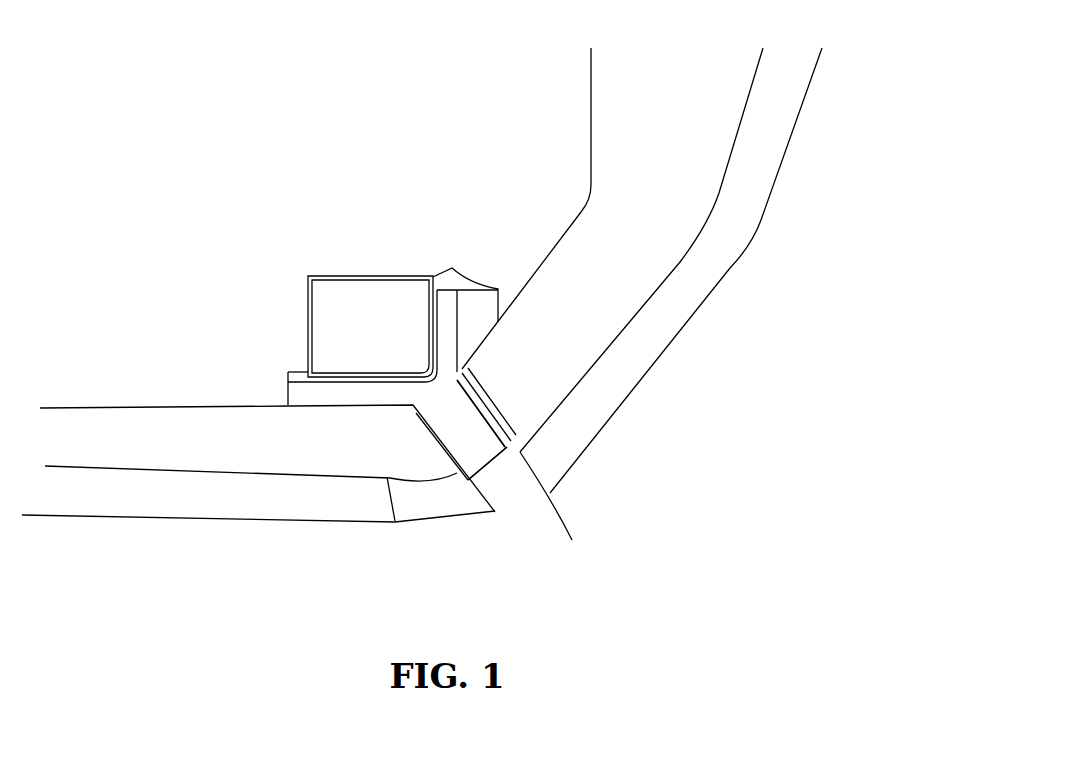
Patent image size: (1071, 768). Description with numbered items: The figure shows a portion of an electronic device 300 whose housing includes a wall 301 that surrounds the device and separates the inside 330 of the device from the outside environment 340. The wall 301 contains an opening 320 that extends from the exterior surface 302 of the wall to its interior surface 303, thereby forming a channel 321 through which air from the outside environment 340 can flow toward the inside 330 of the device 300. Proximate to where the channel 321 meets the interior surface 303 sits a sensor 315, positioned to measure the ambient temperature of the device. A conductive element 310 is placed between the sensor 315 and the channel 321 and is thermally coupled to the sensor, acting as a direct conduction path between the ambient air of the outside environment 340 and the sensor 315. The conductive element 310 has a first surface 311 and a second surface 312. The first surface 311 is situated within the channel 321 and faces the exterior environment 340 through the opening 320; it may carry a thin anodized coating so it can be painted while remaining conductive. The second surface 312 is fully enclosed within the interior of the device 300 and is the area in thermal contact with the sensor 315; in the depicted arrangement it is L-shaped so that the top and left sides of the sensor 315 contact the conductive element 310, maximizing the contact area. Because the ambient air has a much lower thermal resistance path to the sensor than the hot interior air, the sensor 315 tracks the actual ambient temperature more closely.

The electronic device 300 is at (528, 31).
The wall 301 is at (252, 446).
The exterior surface 302 is at (578, 433).
The interior surface 303 is at (548, 258).
The conductive element 310 is at (359, 435).
The first surface 311 is at (572, 540).
The second surface 312 is at (290, 370).
The sensor 315 is at (310, 333).
The opening 320 is at (522, 509).
The channel 321 is at (495, 488).
The inside 330 is at (282, 182).
The outside environment 340 is at (756, 457).